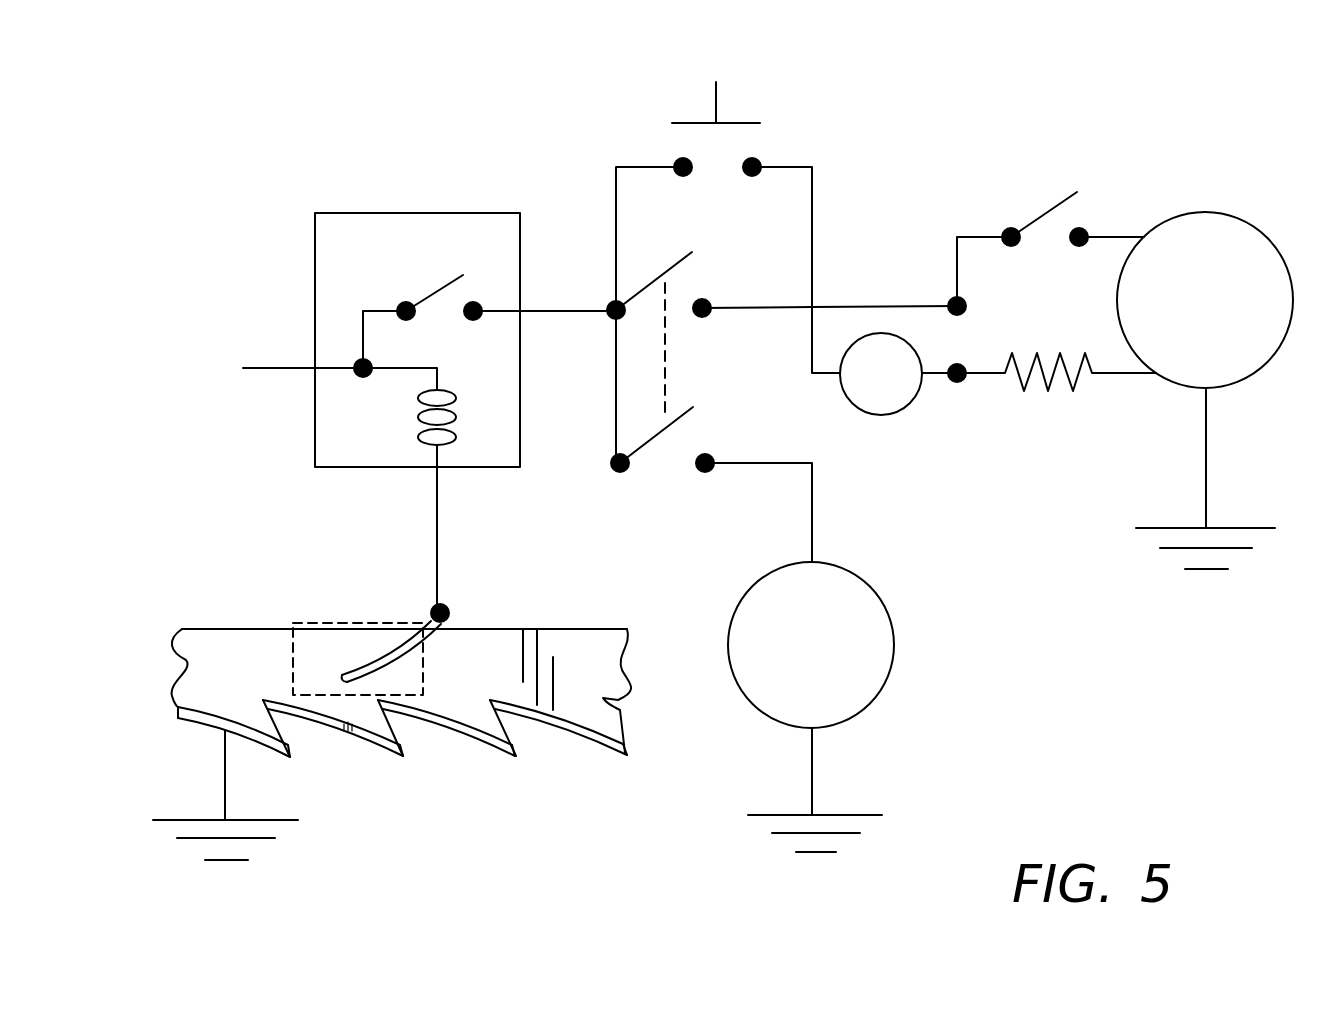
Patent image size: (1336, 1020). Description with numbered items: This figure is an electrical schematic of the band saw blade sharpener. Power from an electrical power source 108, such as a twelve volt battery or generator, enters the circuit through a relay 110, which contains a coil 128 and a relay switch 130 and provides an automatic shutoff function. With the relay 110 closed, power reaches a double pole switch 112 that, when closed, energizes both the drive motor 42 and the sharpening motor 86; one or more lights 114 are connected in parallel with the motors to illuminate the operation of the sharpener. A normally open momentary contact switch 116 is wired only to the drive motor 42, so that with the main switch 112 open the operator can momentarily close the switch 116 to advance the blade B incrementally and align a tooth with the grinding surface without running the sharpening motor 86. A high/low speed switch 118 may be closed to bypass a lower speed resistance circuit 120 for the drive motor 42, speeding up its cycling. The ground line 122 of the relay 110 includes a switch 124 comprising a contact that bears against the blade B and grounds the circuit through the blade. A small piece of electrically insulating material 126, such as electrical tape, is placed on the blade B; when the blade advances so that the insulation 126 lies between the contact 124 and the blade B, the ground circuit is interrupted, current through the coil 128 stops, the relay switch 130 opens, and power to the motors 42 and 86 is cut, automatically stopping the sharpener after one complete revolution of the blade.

The relay 110 is at (328, 168).
The electrical power source 108 is at (210, 342).
The relay switch 130 is at (427, 300).
The coil 128 is at (413, 412).
The ground line 122 is at (437, 530).
The switch 124 is at (391, 648).
The electrically insulating material 126 is at (300, 617).
The blade B is at (540, 625).
The momentary contact switch 116 is at (697, 122).
The double pole switch 112 is at (615, 372).
The high/low speed switch 118 is at (1037, 215).
The drive motor 42 is at (1262, 232).
The lower speed resistance circuit 120 is at (1052, 388).
The light 114 is at (883, 415).
The sharpening motor 86 is at (893, 633).